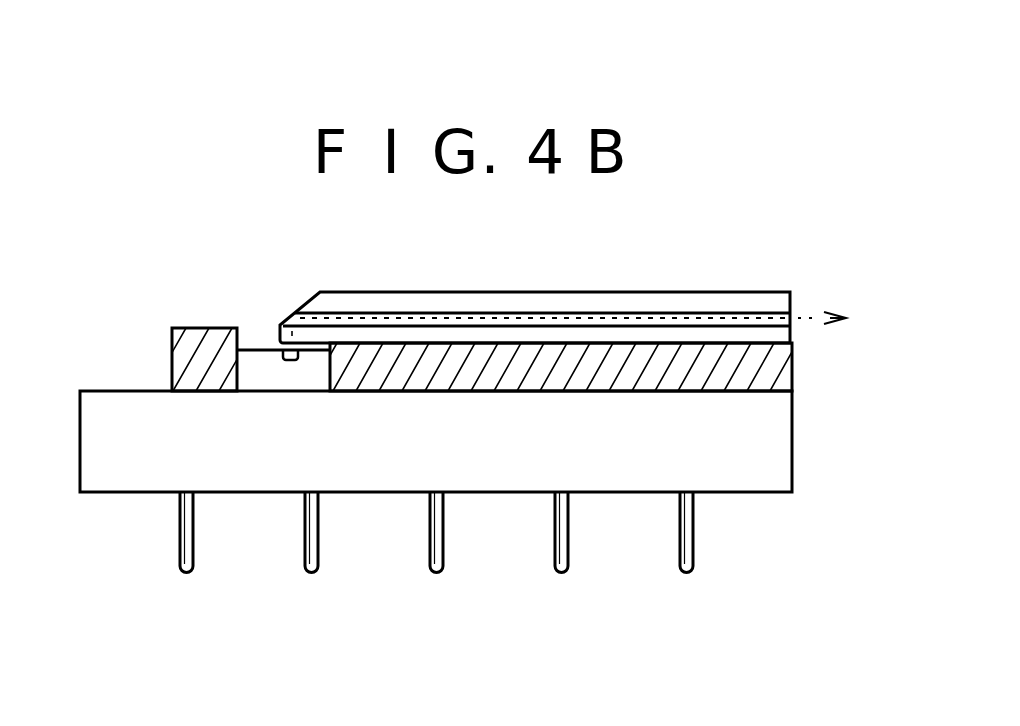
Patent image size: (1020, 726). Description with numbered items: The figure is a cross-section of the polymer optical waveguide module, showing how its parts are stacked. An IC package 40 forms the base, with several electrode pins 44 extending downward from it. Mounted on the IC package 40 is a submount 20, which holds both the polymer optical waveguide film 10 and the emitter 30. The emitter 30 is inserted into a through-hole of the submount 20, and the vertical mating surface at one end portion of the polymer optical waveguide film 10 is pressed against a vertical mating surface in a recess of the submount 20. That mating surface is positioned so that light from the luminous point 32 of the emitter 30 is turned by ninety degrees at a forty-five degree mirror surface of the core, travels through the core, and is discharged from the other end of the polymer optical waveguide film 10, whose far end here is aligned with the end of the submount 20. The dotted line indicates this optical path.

The polymer optical waveguide film 10 is at (747, 302).
The submount 20 is at (770, 378).
The emitter 30 is at (257, 356).
The luminous point 32 is at (290, 361).
The IC package 40 is at (768, 452).
The electrode pin 44 is at (695, 540).